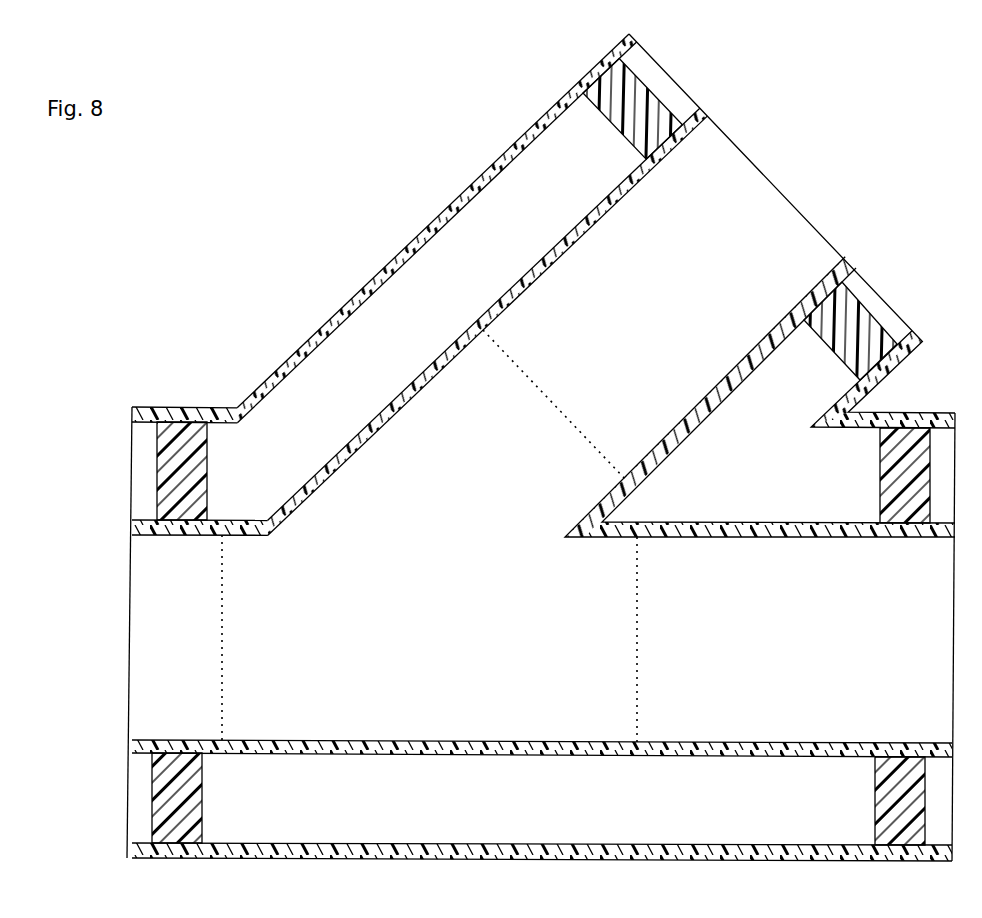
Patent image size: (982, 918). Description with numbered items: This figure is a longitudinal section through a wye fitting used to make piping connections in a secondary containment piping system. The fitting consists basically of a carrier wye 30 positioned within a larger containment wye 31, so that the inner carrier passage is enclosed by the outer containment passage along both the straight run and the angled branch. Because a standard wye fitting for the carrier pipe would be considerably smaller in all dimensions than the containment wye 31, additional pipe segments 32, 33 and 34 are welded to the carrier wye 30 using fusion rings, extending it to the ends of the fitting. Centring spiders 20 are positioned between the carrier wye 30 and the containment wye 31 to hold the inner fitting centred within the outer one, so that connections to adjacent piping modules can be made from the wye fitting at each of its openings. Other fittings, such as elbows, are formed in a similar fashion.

The centring spider 20 is at (615, 128).
The carrier wye 30 is at (349, 443).
The containment wye 31 is at (416, 238).
The pipe segment 32 is at (182, 652).
The pipe segment 33 is at (800, 661).
The pipe segment 34 is at (640, 326).